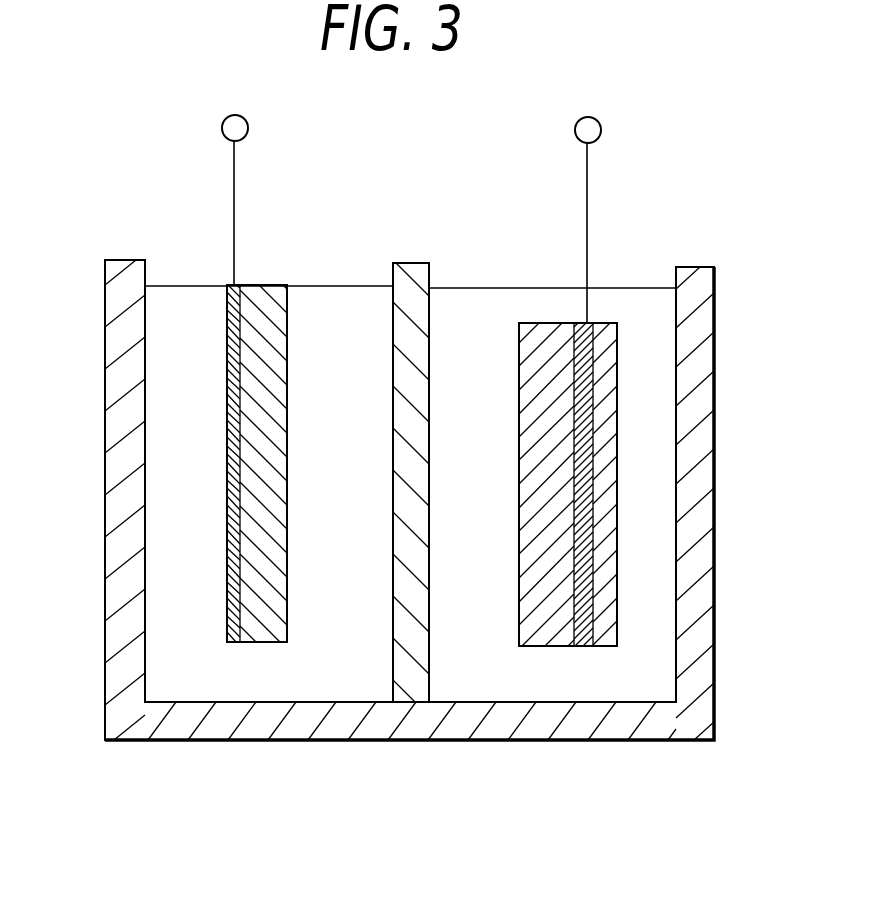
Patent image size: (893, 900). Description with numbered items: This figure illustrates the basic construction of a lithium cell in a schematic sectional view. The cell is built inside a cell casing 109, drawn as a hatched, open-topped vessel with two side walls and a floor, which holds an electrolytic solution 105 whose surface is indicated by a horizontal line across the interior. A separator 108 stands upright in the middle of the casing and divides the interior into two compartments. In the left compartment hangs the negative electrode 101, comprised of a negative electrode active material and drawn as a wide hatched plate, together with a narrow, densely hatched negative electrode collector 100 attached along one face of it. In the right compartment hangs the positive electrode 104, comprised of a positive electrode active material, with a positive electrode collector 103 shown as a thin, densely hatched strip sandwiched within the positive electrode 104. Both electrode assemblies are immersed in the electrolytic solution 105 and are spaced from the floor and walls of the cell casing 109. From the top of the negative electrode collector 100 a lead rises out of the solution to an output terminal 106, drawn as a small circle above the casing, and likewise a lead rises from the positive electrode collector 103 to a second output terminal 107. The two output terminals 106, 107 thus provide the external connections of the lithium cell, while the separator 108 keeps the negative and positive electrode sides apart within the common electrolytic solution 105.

The negative electrode collector 100 is at (161, 552).
The negative electrode 101 is at (255, 630).
The positive electrode collector 103 is at (590, 345).
The positive electrode 104 is at (607, 505).
The electrolytic solution 105 is at (455, 675).
The output terminal 106 is at (223, 119).
The output terminal 107 is at (601, 120).
The separator 108 is at (417, 265).
The cell casing 109 is at (700, 445).